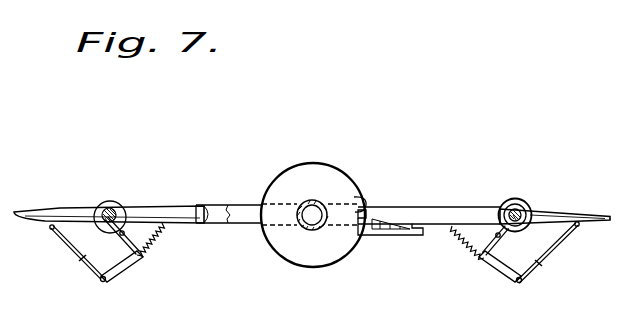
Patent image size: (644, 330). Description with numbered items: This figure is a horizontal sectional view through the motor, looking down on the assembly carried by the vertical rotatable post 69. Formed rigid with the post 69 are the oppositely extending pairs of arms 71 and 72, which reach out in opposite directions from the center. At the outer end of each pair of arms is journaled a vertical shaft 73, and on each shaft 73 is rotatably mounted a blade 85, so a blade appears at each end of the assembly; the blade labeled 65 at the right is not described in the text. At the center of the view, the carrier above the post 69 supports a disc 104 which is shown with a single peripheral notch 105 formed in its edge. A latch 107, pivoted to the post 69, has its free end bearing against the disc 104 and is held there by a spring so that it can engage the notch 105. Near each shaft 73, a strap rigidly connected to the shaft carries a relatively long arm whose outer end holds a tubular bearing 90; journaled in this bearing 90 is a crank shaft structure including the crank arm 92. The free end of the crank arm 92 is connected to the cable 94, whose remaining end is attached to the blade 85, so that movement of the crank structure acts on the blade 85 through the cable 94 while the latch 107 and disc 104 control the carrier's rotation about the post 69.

The disc 104 is at (292, 183).
The rotatable post 69 is at (303, 228).
The arms 72 is at (238, 208).
The arms 71 is at (460, 213).
The peripheral notch 105 is at (362, 197).
The latch 107 is at (367, 215).
The blade 85 is at (57, 209).
The right wing 65 is at (570, 210).
The vertical shaft 73 is at (108, 210).
The cable 94 is at (63, 244).
The tubular bearing 90 is at (123, 264).
The crank arm 92 is at (100, 280).